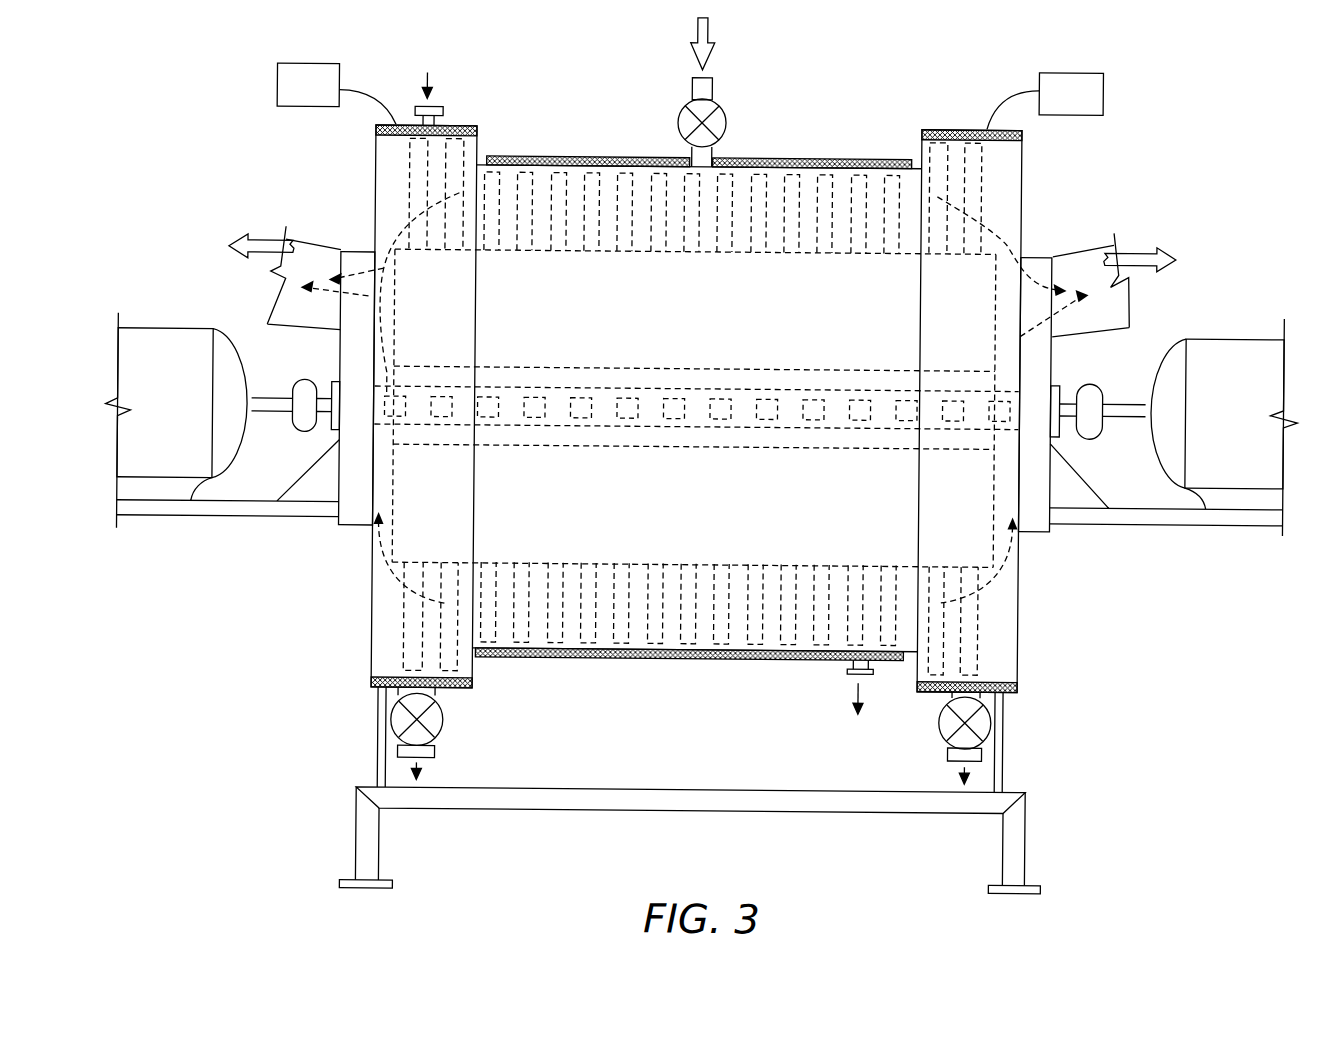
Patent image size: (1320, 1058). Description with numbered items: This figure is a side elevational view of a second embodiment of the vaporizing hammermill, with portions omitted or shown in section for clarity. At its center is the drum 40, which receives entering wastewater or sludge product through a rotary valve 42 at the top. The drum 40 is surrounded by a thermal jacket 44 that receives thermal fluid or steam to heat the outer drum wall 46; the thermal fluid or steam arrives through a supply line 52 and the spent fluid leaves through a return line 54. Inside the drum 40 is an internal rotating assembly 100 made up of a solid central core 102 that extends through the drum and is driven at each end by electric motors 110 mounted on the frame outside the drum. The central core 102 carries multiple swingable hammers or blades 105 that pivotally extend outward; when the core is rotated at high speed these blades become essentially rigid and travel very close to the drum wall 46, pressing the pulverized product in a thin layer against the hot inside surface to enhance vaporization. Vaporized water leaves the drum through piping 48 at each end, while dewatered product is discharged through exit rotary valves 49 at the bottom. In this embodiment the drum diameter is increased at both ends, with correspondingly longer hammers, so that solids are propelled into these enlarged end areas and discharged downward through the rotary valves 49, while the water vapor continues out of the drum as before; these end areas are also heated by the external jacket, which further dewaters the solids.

The drum 40 is at (806, 122).
The rotary valve 42 is at (707, 76).
The thermal jacket 44 is at (560, 155).
The outer drum wall 46 is at (900, 152).
The piping 48 is at (318, 242).
The exit rotary valves 49 is at (433, 721).
The supply line 52 is at (430, 106).
The return line 54 is at (856, 673).
The internal rotating assembly 100 is at (1108, 157).
The central core 102 is at (429, 536).
The swingable hammers or blades 105 is at (416, 629).
The electric motors 110 is at (170, 343).